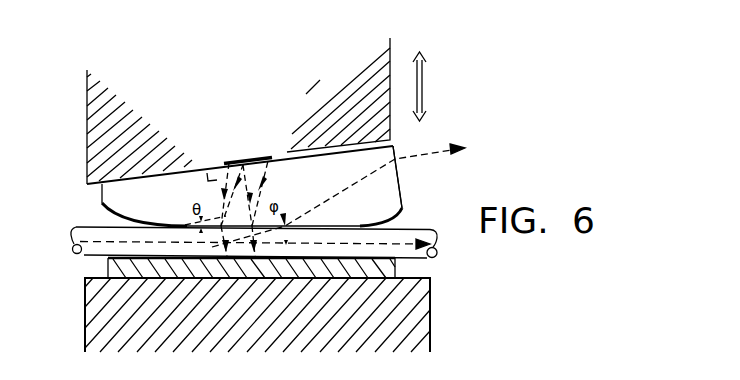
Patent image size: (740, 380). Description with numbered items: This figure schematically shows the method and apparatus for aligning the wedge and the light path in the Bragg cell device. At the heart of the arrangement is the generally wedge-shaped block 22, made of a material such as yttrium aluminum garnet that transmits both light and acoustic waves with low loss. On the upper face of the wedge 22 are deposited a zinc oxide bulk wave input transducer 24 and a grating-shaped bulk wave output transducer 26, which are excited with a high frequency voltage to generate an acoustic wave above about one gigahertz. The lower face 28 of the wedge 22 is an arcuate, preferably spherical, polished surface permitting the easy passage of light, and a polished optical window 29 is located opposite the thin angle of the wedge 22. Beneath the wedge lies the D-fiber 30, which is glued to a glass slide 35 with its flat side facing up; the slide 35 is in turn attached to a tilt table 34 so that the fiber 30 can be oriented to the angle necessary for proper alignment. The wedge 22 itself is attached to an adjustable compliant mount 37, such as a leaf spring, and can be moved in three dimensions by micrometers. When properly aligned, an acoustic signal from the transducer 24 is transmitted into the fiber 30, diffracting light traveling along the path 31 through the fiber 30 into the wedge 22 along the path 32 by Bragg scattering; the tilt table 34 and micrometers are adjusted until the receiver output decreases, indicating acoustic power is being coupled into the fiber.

The wedge-shaped block 22 is at (268, 153).
The bulk wave input transducer 24 is at (230, 165).
The bulk wave output transducer 26 is at (256, 150).
The lower face 28 is at (134, 214).
The optical window 29 is at (399, 178).
The optical fiber 30 is at (276, 242).
The light path 31 is at (390, 240).
The diffracted light path 32 is at (357, 186).
The tilt table 34 is at (431, 316).
The glass slide 35 is at (400, 268).
The adjustable compliant mount 37 is at (391, 47).